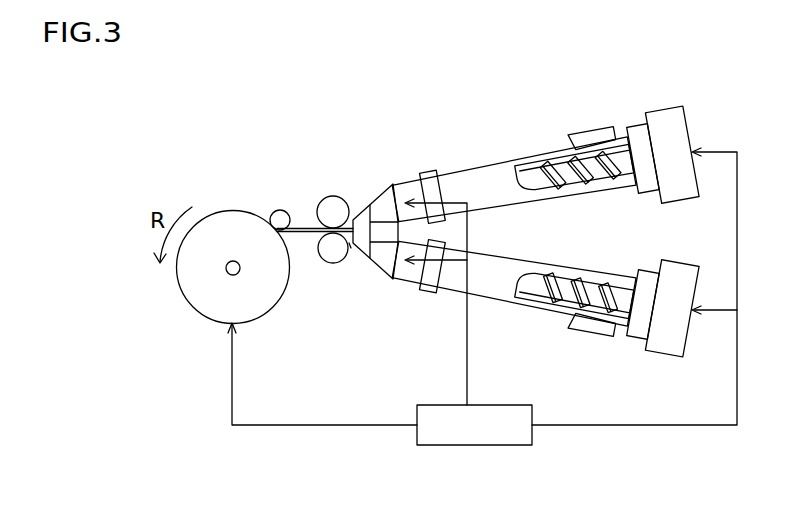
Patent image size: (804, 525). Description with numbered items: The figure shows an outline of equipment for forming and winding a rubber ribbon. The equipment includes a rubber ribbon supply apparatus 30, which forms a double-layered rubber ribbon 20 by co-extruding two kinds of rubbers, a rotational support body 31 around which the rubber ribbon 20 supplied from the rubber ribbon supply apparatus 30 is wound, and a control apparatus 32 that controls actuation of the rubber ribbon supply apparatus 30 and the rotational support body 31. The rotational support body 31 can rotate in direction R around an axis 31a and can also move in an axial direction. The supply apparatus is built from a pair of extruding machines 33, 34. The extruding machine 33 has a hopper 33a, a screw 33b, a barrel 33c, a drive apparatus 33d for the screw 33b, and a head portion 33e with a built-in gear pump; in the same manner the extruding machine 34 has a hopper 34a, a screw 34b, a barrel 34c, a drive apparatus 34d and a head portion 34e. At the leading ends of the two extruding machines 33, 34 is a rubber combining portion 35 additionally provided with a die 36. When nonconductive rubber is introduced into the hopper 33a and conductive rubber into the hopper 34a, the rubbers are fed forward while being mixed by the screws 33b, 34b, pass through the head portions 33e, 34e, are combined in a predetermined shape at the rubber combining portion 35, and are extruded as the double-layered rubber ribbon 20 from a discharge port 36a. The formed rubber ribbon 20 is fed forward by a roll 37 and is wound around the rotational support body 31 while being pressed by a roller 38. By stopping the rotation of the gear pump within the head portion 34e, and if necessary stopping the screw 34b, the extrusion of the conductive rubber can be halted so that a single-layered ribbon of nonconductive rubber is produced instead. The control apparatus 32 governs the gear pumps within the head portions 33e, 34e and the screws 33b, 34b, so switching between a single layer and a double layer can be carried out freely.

The rubber ribbon 20 is at (304, 226).
The rubber ribbon supply apparatus 30 is at (608, 360).
The rotational support body 31 is at (226, 210).
The axis 31a is at (226, 269).
The control apparatus 32 is at (463, 438).
The extruding machine 33 is at (471, 166).
The hopper 33a is at (599, 132).
The screw 33b is at (558, 168).
The barrel 33c is at (520, 150).
The drive apparatus 33d is at (668, 113).
The head portion 33e is at (408, 186).
The extruding machine 34 is at (490, 304).
The hopper 34a is at (605, 257).
The screw 34b is at (572, 298).
The barrel 34c is at (550, 262).
The drive apparatus 34d is at (682, 268).
The head portion 34e is at (405, 292).
The rubber combining portion 35 is at (373, 211).
The die 36 is at (346, 198).
The discharge port 36a is at (357, 248).
The roll 37 is at (332, 263).
The roller 38 is at (270, 210).